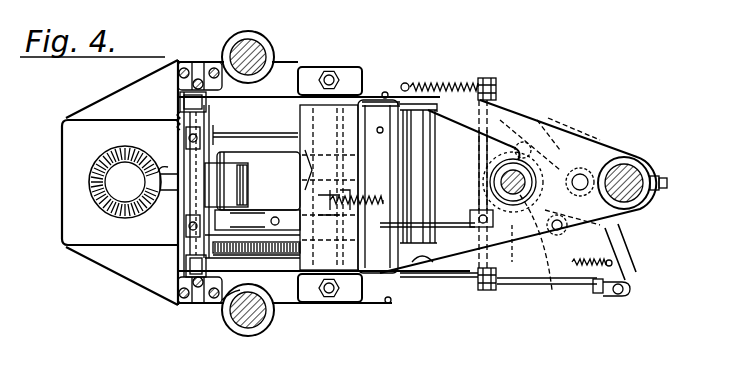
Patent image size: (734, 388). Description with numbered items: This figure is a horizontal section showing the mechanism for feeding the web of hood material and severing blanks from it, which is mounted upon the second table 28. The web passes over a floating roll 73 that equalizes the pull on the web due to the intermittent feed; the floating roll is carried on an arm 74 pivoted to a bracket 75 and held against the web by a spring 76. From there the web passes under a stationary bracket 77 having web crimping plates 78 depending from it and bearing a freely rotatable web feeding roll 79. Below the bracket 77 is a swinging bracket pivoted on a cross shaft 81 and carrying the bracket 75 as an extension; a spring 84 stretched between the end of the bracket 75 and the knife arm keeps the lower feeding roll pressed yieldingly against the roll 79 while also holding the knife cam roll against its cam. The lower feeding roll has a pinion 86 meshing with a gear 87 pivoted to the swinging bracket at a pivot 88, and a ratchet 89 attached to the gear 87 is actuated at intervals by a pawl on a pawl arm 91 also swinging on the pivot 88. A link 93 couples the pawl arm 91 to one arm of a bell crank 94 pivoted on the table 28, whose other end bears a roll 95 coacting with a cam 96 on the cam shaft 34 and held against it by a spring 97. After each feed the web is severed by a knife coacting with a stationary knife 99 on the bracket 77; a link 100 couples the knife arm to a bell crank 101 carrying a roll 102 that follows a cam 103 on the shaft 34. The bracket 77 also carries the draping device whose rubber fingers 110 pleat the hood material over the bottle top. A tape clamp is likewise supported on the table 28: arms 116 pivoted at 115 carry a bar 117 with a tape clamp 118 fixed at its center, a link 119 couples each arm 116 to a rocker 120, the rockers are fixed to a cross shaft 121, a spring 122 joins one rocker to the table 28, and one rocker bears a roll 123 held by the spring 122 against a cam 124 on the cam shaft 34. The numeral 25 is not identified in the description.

The mounting bolt 25 is at (246, 52).
The second table 28 is at (413, 282).
The cam shaft 34 is at (580, 150).
The floating roll 73 is at (436, 139).
The arm 74 is at (431, 115).
The bracket 75 is at (378, 196).
The spring 76 is at (374, 98).
The stationary bracket 77 is at (286, 142).
The web crimping plates 78 is at (252, 181).
The web feeding roll 79 is at (237, 163).
The cross shaft 81 is at (337, 179).
The spring 84 is at (356, 194).
The pinion 86 is at (184, 258).
The gear 87 is at (227, 298).
The pivot 88 is at (257, 207).
The ratchet 89 is at (282, 298).
The pawl arm 91 is at (297, 283).
The link 93 is at (530, 284).
The bell crank 94 is at (600, 233).
The roll 95 is at (560, 292).
The cam 96 is at (513, 248).
The spring 97 is at (592, 271).
The stationary knife 99 is at (186, 238).
The link 100 is at (447, 223).
The bell crank 101 is at (577, 172).
The roll 102 is at (540, 127).
The cam 103 is at (503, 118).
The fingers 110 is at (88, 178).
The pivot 115 is at (180, 103).
The arms 116 is at (180, 84).
The bar 117 is at (225, 132).
The tape clamp 118 is at (160, 168).
The link 119 is at (388, 92).
The rocker 120 is at (493, 82).
The cross shaft 121 is at (483, 153).
The spring 122 is at (427, 80).
The roll 123 is at (480, 207).
The cam 124 is at (460, 278).